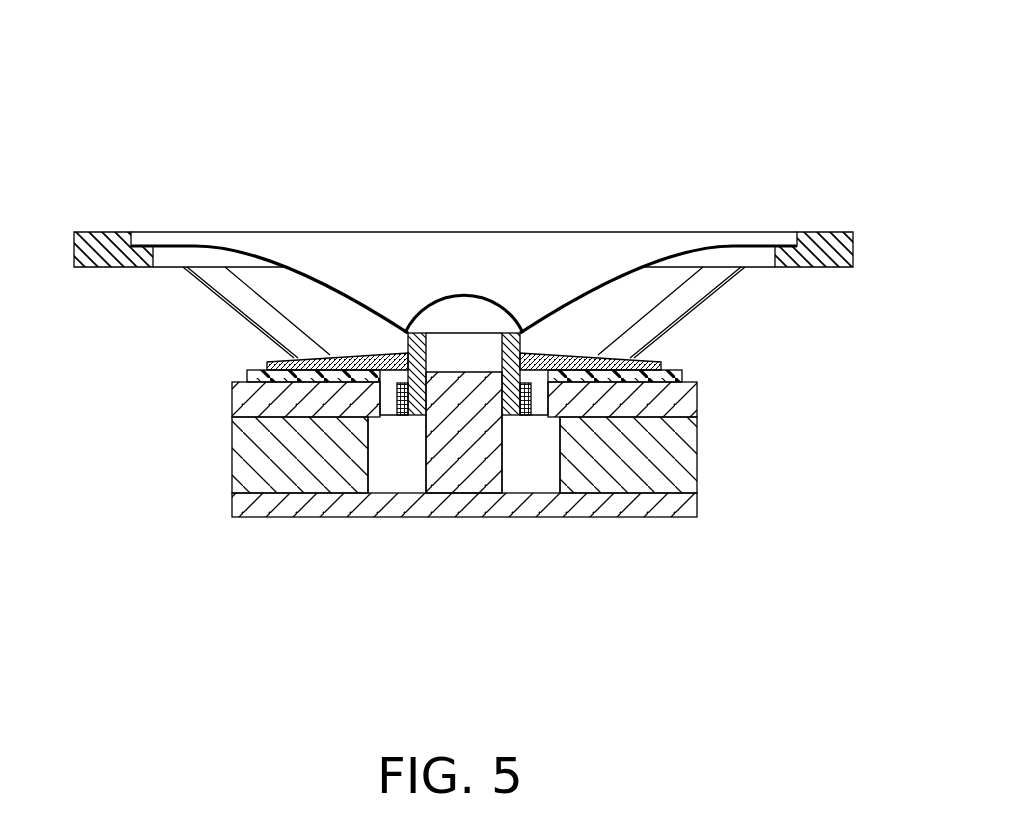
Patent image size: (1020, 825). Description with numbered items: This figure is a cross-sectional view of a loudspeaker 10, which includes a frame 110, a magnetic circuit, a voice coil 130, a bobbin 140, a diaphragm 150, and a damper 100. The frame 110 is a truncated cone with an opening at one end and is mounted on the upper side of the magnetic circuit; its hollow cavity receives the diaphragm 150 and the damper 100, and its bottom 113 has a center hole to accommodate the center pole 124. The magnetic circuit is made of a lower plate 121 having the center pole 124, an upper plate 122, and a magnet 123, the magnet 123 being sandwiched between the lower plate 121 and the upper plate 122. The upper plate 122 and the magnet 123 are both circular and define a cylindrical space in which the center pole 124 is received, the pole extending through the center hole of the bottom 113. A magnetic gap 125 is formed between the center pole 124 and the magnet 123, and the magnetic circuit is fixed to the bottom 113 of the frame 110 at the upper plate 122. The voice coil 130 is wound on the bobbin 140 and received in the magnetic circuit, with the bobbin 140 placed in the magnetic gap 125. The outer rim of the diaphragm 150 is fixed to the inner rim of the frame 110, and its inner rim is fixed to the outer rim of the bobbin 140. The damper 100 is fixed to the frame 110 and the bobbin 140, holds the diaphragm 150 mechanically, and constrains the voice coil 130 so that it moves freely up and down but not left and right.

The loudspeaker 10 is at (467, 64).
The damper 100 is at (660, 363).
The frame 110 is at (105, 233).
The bottom 113 is at (681, 374).
The lower plate 121 is at (687, 507).
The upper plate 122 is at (680, 395).
The magnet 123 is at (677, 452).
The center pole 124 is at (450, 457).
The magnetic gap 125 is at (547, 494).
The voice coil 130 is at (397, 399).
The bobbin 140 is at (407, 336).
The diaphragm 150 is at (337, 290).